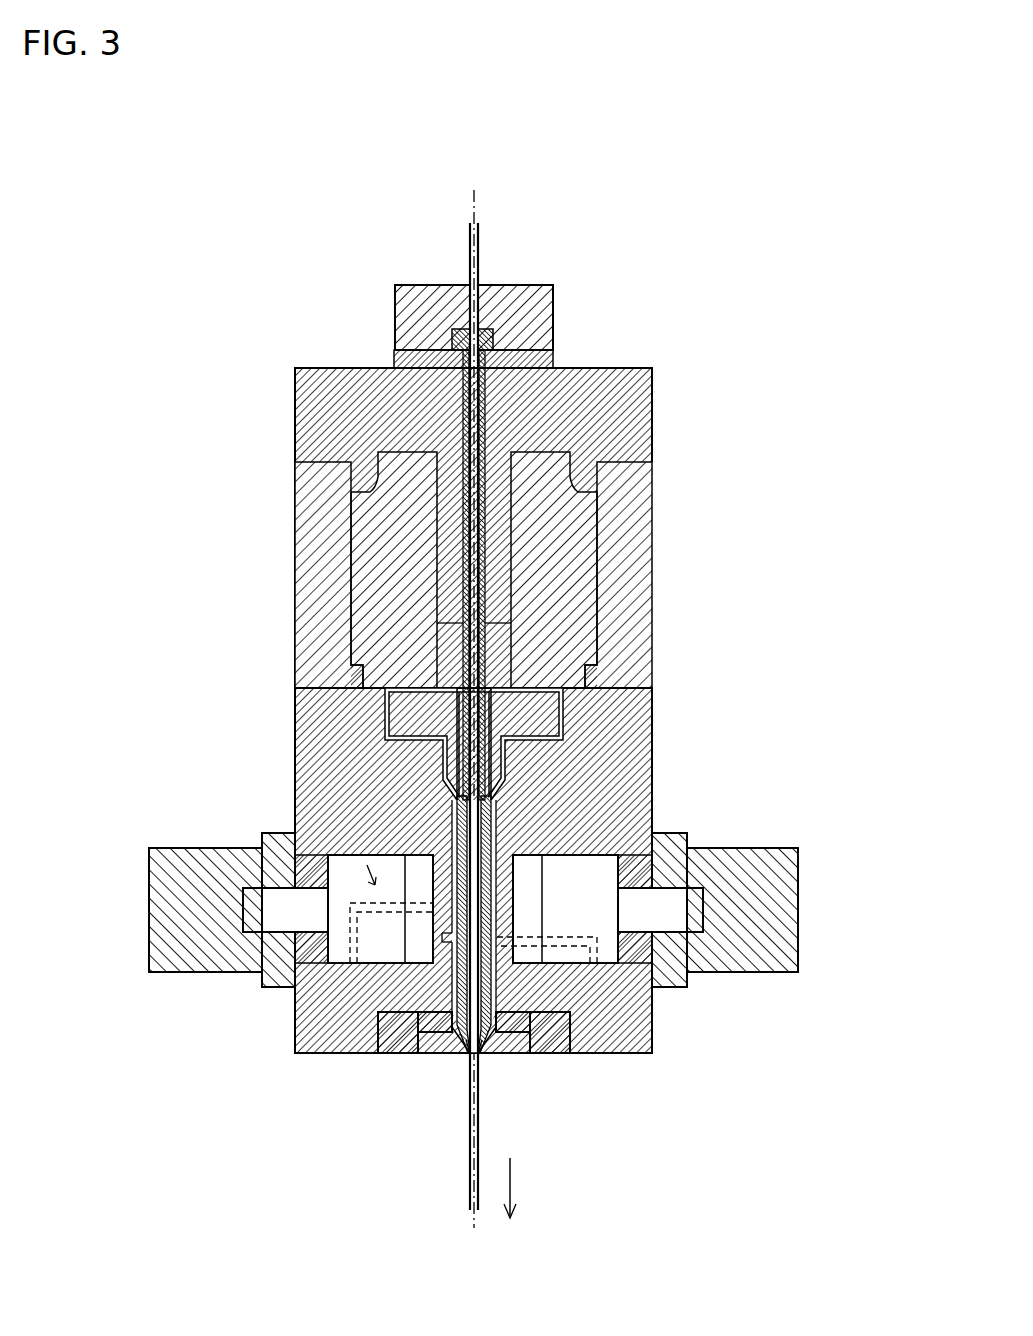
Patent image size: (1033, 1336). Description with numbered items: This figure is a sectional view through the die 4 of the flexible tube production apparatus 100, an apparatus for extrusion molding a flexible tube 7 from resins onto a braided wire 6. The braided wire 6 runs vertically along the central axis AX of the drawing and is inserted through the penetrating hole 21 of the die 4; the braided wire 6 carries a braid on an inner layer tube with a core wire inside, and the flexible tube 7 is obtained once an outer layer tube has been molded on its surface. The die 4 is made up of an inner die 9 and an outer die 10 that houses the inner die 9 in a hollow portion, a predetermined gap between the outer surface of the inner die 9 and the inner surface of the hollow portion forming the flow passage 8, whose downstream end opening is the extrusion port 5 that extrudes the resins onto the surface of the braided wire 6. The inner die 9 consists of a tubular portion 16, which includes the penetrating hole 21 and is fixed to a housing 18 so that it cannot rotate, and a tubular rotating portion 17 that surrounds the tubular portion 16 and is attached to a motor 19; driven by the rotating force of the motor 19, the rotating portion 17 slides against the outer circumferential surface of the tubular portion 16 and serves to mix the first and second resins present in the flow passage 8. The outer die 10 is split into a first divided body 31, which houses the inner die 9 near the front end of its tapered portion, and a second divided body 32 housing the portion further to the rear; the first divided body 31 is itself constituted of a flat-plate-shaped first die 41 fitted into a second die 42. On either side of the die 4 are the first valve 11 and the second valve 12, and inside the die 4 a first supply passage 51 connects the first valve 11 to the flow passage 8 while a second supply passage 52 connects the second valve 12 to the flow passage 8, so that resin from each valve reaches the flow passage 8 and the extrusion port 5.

The flexible tube production apparatus 100 is at (185, 232).
The axis AX is at (478, 198).
The braided wire 6 is at (480, 259).
The housing 18 is at (652, 412).
The motor 19 is at (580, 573).
The penetrating hole 21 is at (582, 718).
The tubular portion 16 is at (545, 801).
The rotating portion 17 is at (540, 828).
The inner die 9 is at (703, 773).
The first supply passage 51 is at (442, 937).
The second supply passage 52 is at (520, 963).
The first valve 11 is at (149, 886).
The second valve 12 is at (798, 906).
The die 4 is at (652, 1033).
The flow passage 8 is at (353, 1002).
The extrusion port 5 is at (482, 1056).
The flexible tube 7 is at (480, 1152).
The first die 41 is at (447, 1032).
The second die 42 is at (403, 1032).
The first divided body 31 is at (435, 1145).
The second divided body 32 is at (356, 1040).
The outer die 10 is at (411, 1187).